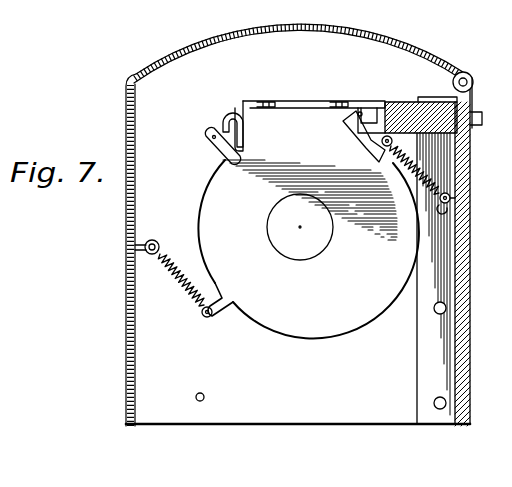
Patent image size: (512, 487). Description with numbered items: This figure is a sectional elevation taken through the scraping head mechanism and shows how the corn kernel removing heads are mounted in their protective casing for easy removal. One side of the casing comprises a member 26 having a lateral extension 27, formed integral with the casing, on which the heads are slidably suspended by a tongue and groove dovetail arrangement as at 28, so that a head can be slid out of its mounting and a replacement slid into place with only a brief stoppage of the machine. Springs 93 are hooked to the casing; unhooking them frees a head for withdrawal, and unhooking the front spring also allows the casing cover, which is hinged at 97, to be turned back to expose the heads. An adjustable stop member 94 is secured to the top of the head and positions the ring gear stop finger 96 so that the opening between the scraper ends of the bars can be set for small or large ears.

The casing side member 26 is at (466, 228).
The lateral extension 27 is at (385, 101).
The tongue and groove arrangement 28 is at (359, 112).
The springs 93 is at (186, 296).
The stop member 94 is at (223, 119).
The ring gear stop finger 96 is at (214, 152).
The hinge 97 is at (482, 58).